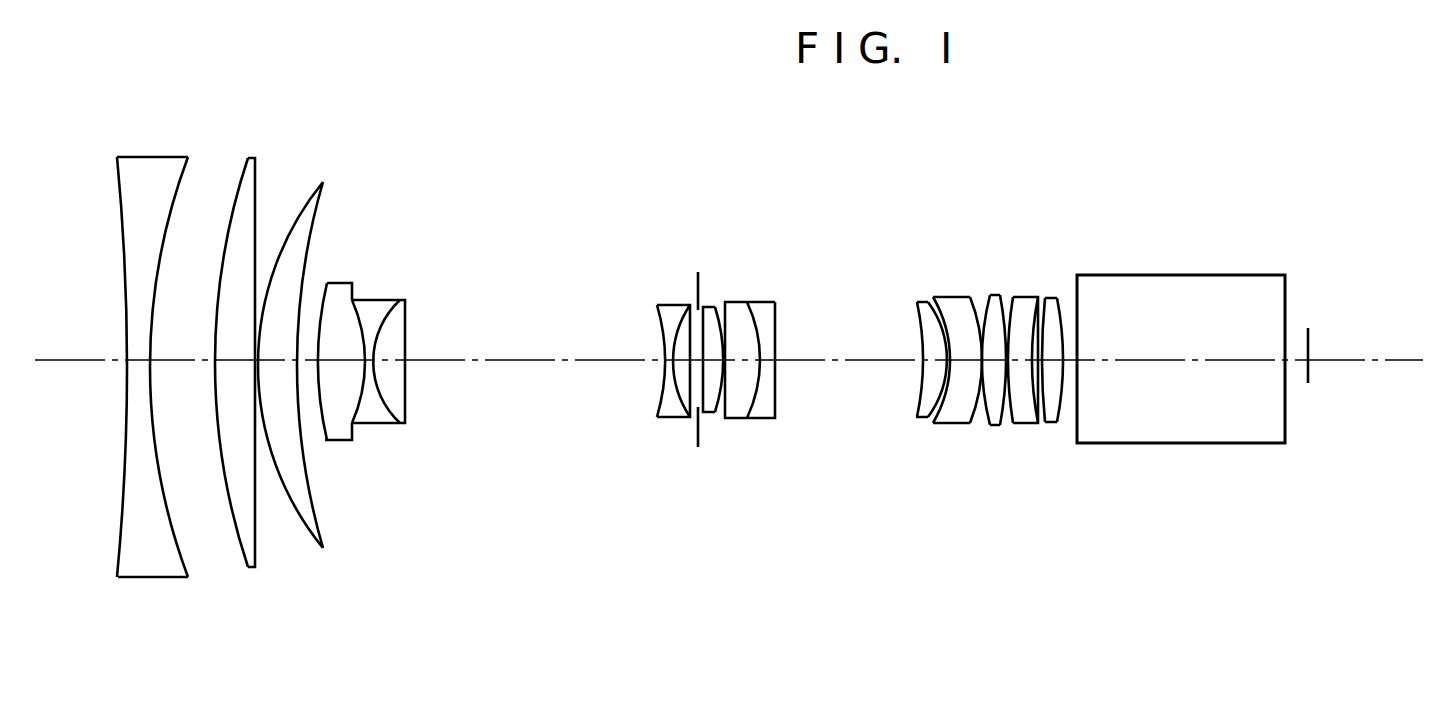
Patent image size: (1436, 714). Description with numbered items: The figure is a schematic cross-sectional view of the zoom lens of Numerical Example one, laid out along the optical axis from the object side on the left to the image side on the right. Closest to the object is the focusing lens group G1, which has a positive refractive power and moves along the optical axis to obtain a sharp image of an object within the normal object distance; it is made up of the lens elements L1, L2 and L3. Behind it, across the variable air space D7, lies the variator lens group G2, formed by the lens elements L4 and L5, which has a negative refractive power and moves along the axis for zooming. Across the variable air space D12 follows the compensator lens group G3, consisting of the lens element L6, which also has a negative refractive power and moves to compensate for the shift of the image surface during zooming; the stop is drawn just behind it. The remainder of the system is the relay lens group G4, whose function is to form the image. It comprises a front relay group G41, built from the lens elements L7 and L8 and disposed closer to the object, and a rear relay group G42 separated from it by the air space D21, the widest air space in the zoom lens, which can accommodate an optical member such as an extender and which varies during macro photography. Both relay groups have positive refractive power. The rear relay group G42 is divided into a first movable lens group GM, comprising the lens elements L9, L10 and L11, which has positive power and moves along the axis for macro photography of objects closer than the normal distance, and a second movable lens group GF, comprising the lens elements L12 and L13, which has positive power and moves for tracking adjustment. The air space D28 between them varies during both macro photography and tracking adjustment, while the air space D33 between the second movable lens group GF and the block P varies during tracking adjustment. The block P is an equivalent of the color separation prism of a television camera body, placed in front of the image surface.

The focusing lens group G1 is at (362, 62).
The variator lens group G2 is at (425, 227).
The compensator lens group G3 is at (688, 222).
The relay lens group G4 is at (1082, 222).
The front relay group G41 is at (788, 549).
The rear relay group G42 is at (1073, 546).
The first movable lens group GM is at (1005, 440).
The second movable lens group GF is at (1062, 440).
The lens element L1 is at (148, 156).
The lens element L2 is at (253, 158).
The lens element L3 is at (320, 181).
The lens element L4 is at (335, 293).
The lens element L5 is at (383, 298).
The lens element L6 is at (672, 305).
The lens element L7 is at (702, 308).
The lens element L8 is at (740, 300).
The lens element L9 is at (918, 302).
The lens element L10 is at (948, 297).
The lens element L11 is at (992, 295).
The lens element L12 is at (1020, 297).
The lens element L13 is at (1050, 298).
The color separation prism equivalent P is at (1168, 275).
The variable air space D7 is at (307, 363).
The variable air space D12 is at (572, 363).
The variable air space D21 is at (852, 365).
The variable air space D28 is at (1007, 361).
The variable air space D33 is at (1068, 361).